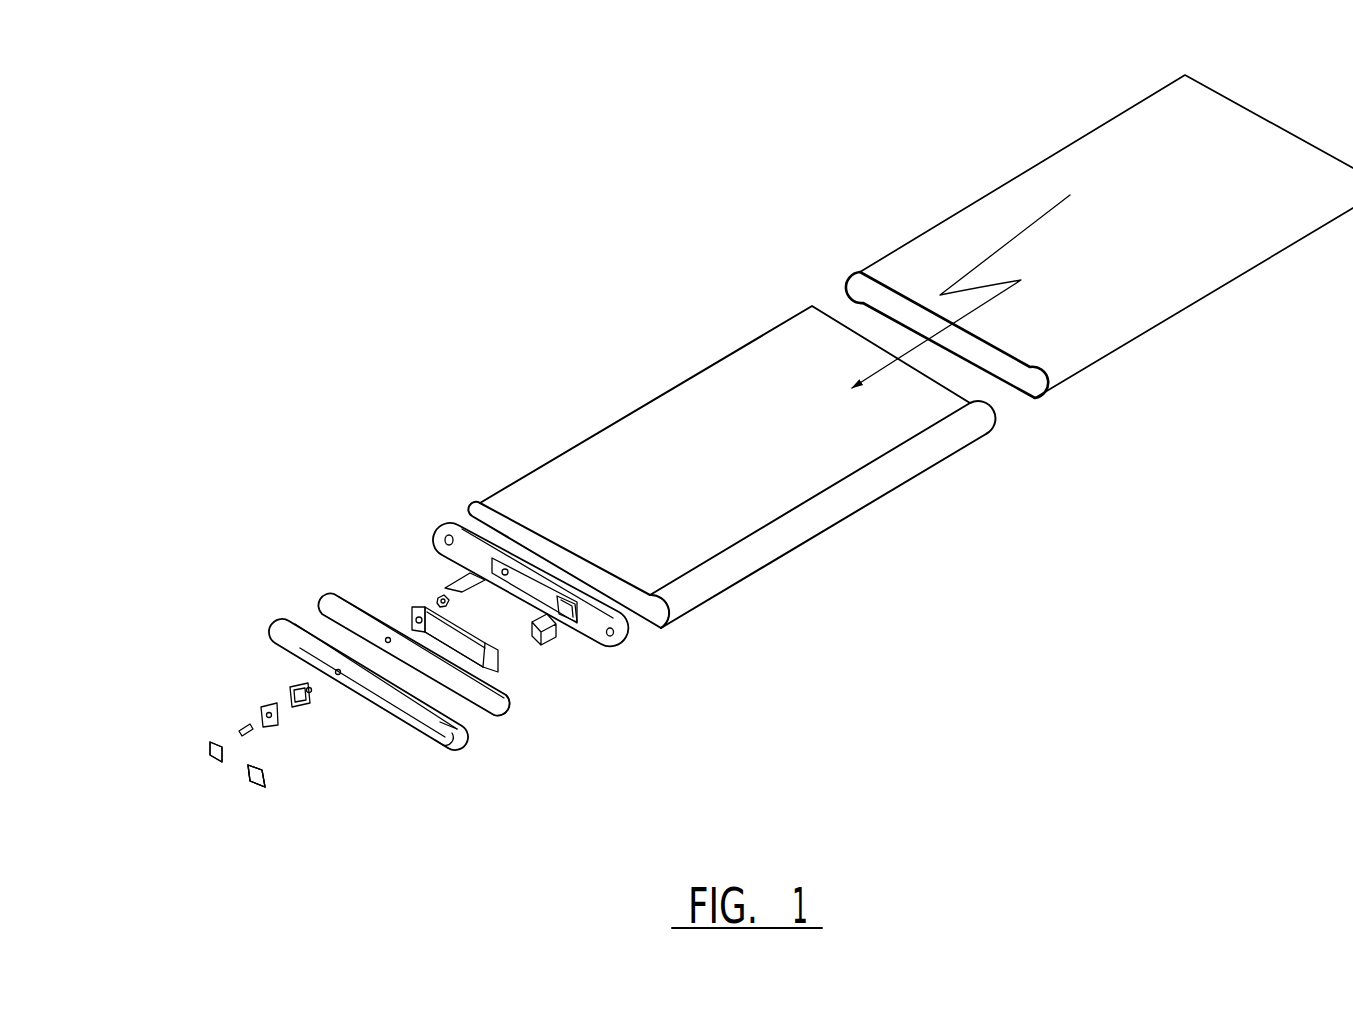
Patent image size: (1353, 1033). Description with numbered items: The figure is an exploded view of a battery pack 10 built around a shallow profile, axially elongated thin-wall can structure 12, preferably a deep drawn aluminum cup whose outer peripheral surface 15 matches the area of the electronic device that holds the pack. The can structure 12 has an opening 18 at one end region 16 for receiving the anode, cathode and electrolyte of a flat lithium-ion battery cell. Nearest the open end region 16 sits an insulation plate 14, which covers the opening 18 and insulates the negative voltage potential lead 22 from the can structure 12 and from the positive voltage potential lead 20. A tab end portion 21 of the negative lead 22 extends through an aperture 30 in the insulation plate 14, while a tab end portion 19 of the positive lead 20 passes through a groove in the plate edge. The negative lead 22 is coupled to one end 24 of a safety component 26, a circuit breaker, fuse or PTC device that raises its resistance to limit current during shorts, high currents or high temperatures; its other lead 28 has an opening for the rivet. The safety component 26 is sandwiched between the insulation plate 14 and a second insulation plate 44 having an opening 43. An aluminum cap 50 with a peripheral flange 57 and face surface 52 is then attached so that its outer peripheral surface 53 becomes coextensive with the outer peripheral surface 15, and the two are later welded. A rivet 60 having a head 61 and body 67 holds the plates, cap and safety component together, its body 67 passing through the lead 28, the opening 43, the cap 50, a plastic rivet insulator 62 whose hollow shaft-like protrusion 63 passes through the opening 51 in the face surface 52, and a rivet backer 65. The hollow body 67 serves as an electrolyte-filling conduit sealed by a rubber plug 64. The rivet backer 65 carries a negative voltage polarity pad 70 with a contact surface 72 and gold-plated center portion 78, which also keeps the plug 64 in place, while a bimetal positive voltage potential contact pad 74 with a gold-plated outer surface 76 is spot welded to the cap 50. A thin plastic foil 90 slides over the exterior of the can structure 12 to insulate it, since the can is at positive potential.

The battery pack 10 is at (748, 214).
The can structure 12 is at (847, 517).
The insulation plate 14 is at (620, 647).
The outer peripheral surface 15 is at (732, 476).
The end region 16 is at (470, 478).
The opening 18 is at (645, 638).
The tab end portion 19 is at (443, 544).
The lead 20 is at (446, 587).
The tab end portion 21 is at (553, 636).
The lead 22 is at (543, 643).
The end 24 is at (508, 672).
The safety component 26 is at (472, 625).
The lead 28 is at (407, 636).
The aperture 30 is at (580, 630).
The opening 43 is at (386, 638).
The second insulation plate 44 is at (500, 715).
The cap 50 is at (450, 708).
The opening 51 is at (340, 676).
The face surface 52 is at (420, 725).
The outer peripheral surface 53 is at (482, 712).
The peripheral flange 57 is at (440, 750).
The rivet 60 is at (428, 588).
The head 61 is at (440, 599).
The rivet insulator 62 is at (278, 681).
The hollow shaft-like protrusion 63 is at (310, 693).
The rubber plug 64 is at (240, 724).
The rivet backer 65 is at (262, 703).
The body 67 is at (406, 614).
The negative voltage polarity pad 70 is at (258, 767).
The surface 72 is at (250, 778).
The positive voltage potential contact pad 74 is at (213, 759).
The outer surface 76 is at (212, 745).
The center portion 78 is at (263, 771).
The plastic foil 90 is at (1207, 296).